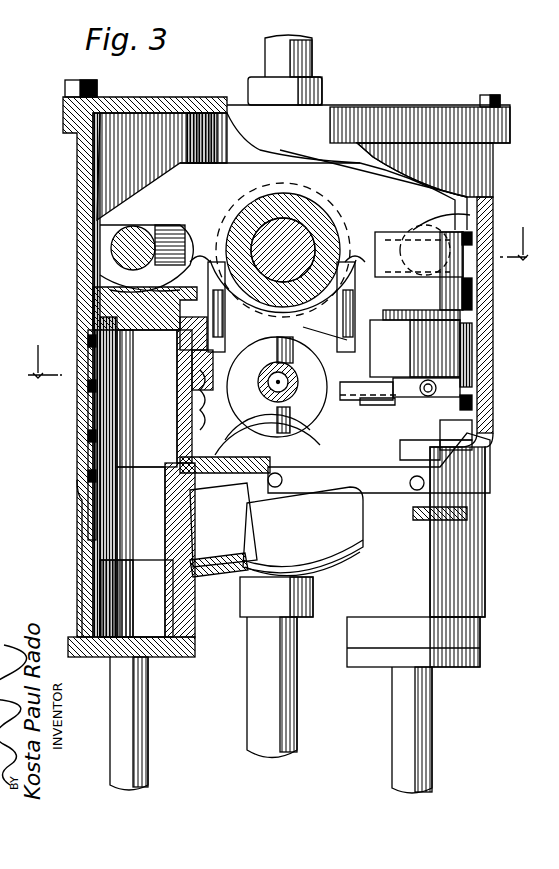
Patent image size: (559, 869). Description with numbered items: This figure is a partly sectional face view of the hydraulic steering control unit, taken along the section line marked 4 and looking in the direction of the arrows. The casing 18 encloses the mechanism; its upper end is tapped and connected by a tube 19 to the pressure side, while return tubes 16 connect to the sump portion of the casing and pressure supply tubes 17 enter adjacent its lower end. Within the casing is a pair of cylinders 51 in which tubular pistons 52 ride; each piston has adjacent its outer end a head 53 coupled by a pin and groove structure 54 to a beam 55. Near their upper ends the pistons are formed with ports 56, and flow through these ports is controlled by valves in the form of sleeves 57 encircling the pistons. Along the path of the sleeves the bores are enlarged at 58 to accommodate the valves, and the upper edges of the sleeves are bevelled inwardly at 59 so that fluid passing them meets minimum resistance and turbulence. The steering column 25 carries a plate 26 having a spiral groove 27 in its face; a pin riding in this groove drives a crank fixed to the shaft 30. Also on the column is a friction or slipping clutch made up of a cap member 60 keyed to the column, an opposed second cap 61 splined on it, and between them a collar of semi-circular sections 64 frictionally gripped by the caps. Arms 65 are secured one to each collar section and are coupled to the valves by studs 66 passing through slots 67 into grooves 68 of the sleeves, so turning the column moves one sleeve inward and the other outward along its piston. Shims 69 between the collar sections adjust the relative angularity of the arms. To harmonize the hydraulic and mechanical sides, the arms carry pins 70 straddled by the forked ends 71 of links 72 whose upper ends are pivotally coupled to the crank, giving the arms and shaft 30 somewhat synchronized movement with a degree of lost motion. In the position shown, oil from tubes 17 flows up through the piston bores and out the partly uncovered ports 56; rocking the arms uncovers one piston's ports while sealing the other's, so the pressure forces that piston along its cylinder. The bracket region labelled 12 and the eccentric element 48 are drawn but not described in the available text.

The section line 4 is at (276, 302).
The bracket 12 is at (228, 322).
The return tube 16 is at (297, 717).
The pressure supply tube 17 is at (133, 730).
The casing 18 is at (487, 212).
The tube 19 is at (300, 62).
The steering column 25 is at (141, 483).
The plate 26 is at (225, 488).
The spiral groove 27 is at (255, 475).
The shaft 30 is at (262, 238).
The eccentric 48 is at (317, 217).
The cylinder 51 is at (515, 533).
The piston 52 is at (100, 508).
The piston head 53 is at (97, 278).
The pin and groove structure 54 is at (118, 247).
The beam 55 is at (410, 195).
The port 56 is at (145, 462).
The sleeve valve 57 is at (98, 328).
The enlarged bore portion 58 is at (77, 392).
The bevelled edge 59 is at (97, 305).
The cap member 60 is at (110, 395).
The second cap 61 is at (318, 440).
The collar section 64 is at (200, 405).
The arm 65 is at (200, 440).
The stud 66 is at (472, 405).
The slot 67 is at (440, 453).
The groove 68 is at (455, 388).
The shim 69 is at (145, 405).
The pin 70 is at (330, 430).
The forked end 71 is at (390, 393).
The link 72 is at (420, 318).